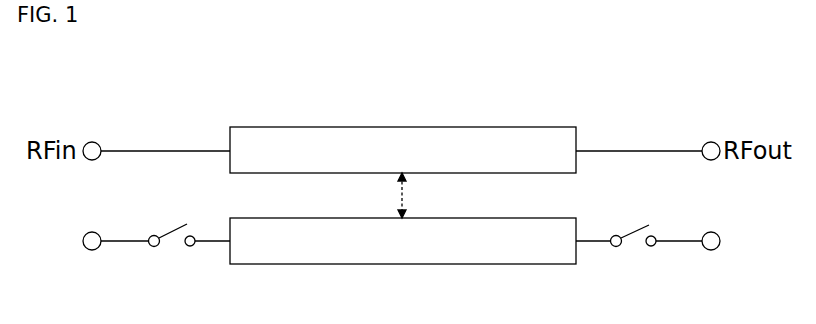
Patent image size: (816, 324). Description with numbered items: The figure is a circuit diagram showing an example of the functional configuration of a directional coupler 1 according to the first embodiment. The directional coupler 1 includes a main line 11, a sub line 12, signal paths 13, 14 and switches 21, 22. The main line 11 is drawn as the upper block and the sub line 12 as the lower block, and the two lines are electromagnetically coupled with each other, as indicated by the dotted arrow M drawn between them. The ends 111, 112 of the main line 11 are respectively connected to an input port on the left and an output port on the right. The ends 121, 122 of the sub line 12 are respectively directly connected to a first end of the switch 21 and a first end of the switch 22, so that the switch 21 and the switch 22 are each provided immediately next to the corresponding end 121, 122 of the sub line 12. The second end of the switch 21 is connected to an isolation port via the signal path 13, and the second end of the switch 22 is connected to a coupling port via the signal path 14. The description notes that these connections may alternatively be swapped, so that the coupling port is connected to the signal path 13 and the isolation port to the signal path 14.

The directional coupler 1 is at (751, 79).
The main line 11 is at (357, 127).
The end of main line 111 is at (228, 150).
The end of main line 112 is at (577, 150).
The sub line 12 is at (357, 218).
The end of sub line 121 is at (577, 241).
The end of sub line 122 is at (228, 241).
The signal path 13 is at (688, 242).
The signal path 14 is at (118, 242).
The switch 21 is at (632, 228).
The switch 22 is at (175, 231).
The dotted arrow M is at (404, 202).